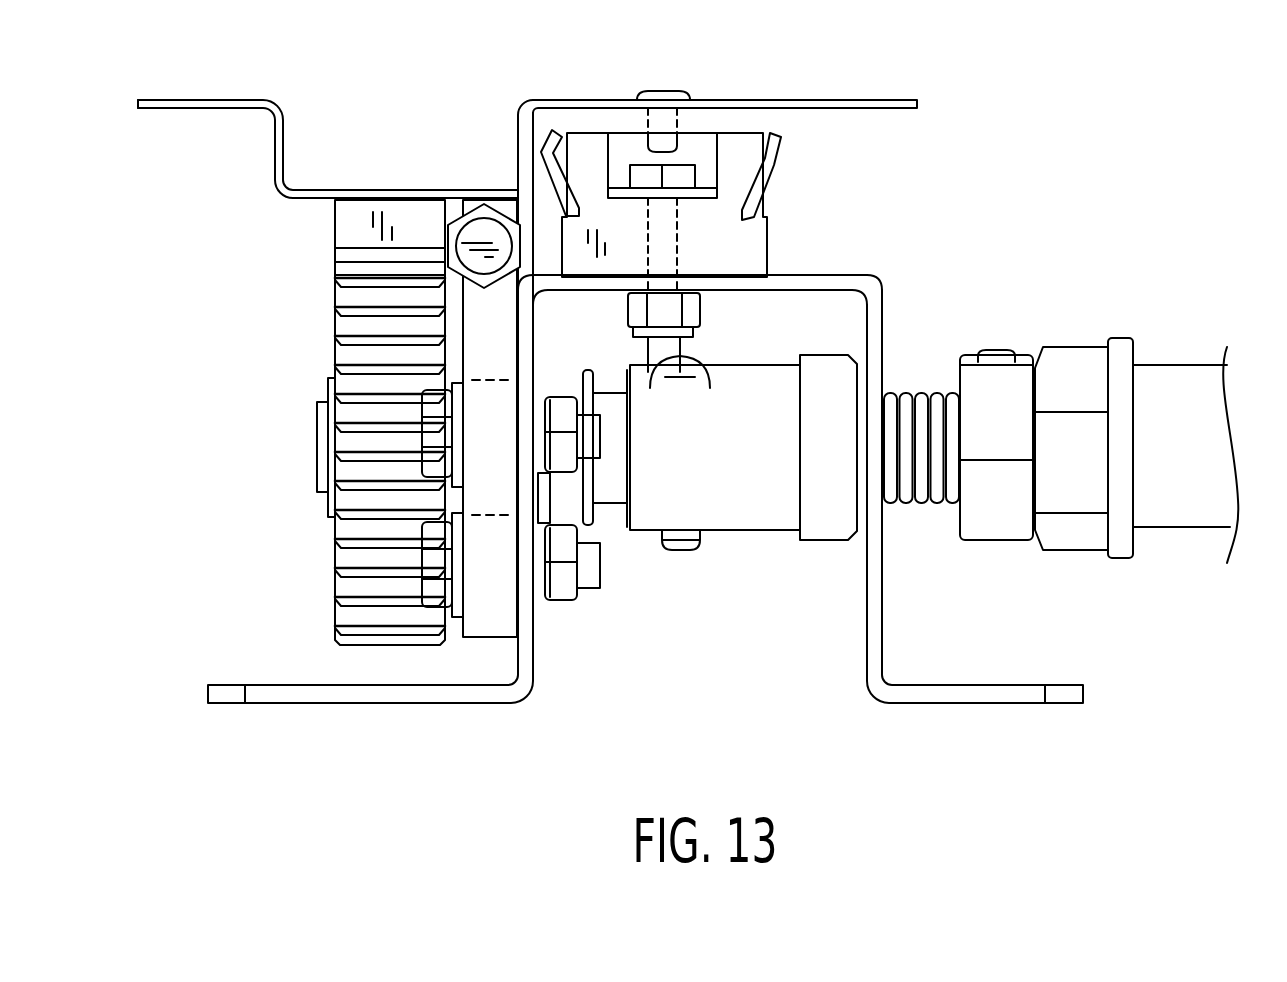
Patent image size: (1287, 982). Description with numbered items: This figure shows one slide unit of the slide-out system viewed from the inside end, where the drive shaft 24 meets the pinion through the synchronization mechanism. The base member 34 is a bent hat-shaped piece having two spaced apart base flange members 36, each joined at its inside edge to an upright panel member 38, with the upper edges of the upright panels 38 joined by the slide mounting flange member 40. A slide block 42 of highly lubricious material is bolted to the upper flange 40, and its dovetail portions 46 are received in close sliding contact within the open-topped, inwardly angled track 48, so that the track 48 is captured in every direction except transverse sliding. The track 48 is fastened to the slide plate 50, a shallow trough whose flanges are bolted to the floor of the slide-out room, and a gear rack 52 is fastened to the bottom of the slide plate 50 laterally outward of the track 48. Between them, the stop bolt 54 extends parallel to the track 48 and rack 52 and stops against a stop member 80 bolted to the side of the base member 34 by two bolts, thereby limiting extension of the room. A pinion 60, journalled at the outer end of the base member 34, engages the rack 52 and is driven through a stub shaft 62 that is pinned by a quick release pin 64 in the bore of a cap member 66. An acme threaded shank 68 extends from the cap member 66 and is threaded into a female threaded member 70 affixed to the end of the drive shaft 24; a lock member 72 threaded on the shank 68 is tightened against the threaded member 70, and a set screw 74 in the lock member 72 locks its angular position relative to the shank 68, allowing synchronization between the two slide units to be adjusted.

The drive shaft 24 is at (1180, 373).
The base member 34 is at (534, 712).
The base flange members 36 is at (282, 701).
The upright panel member 38 is at (534, 403).
The slide mounting flange member 40 is at (821, 279).
The slide block 42 is at (752, 253).
The dovetail portions 46 is at (578, 152).
The track 48 is at (775, 135).
The slide plate 50 is at (316, 190).
The gear rack 52 is at (346, 222).
The stop bolt 54 is at (484, 227).
The pinion 60 is at (346, 371).
The stub shaft 62 is at (608, 483).
The quick release pin 64 is at (678, 548).
The cap member 66 is at (753, 510).
The threaded shank 68 is at (913, 504).
The female threaded member 70 is at (1070, 363).
The lock member 72 is at (972, 386).
The set screw 74 is at (995, 351).
The stop member 80 is at (503, 340).